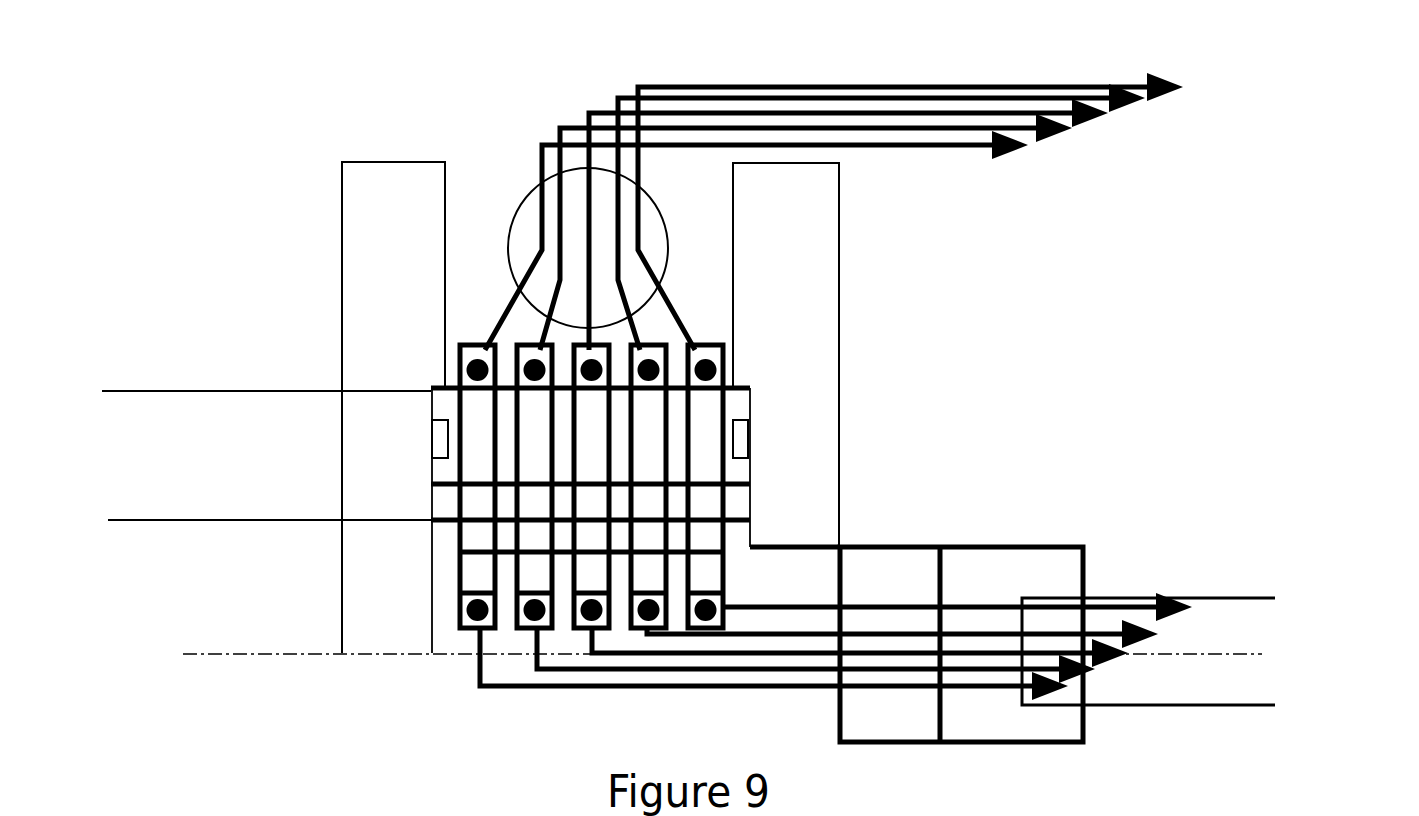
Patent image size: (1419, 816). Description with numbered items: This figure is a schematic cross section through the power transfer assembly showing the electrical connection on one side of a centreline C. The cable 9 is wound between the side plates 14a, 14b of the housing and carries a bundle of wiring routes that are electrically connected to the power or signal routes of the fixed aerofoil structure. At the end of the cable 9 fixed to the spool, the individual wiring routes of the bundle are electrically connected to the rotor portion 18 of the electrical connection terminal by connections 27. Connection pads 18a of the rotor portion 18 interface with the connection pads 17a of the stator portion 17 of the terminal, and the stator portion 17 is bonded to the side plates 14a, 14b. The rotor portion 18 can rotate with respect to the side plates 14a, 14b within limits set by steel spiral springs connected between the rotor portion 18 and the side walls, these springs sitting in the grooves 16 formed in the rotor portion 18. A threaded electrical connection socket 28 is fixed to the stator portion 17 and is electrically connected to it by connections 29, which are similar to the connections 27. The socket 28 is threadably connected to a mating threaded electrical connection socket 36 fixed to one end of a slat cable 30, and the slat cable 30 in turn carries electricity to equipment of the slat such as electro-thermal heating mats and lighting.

The cable 9 is at (530, 197).
The side plate 14a is at (360, 610).
The side plate 14b is at (805, 240).
The grooves 16 is at (437, 432).
The stator portion 17 is at (530, 578).
The connection pads 17a is at (475, 540).
The rotor portion 18 is at (478, 428).
The connection pads 18a is at (640, 507).
The connections 27 is at (513, 368).
The threaded electrical connection socket 28 is at (883, 573).
The connections 29 is at (665, 592).
The slat cable 30 is at (1232, 594).
The mating threaded electrical connection socket 36 is at (1003, 567).
The centreline C is at (233, 657).